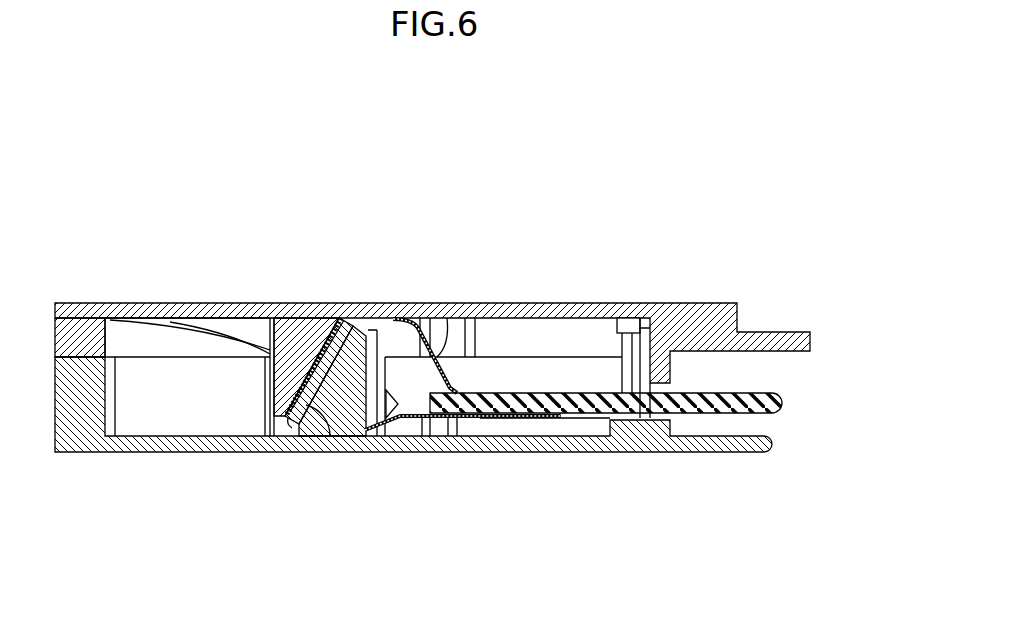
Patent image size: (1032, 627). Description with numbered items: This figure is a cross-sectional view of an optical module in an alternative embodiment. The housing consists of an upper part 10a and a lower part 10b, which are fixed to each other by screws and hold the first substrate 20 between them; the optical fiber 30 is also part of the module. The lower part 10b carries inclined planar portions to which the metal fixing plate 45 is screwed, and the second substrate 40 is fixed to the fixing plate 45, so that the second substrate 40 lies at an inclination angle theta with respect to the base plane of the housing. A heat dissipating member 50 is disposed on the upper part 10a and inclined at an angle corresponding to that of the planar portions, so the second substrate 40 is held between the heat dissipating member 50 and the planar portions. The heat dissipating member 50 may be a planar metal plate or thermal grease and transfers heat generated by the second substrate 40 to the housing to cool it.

The upper part 10a is at (92, 325).
The lower part 10b is at (75, 444).
The first substrate 20 is at (598, 392).
The optical fiber 30 is at (247, 327).
The second substrate 40 is at (442, 362).
The fixing plate 45 is at (358, 326).
The heat dissipating member 50 is at (345, 320).